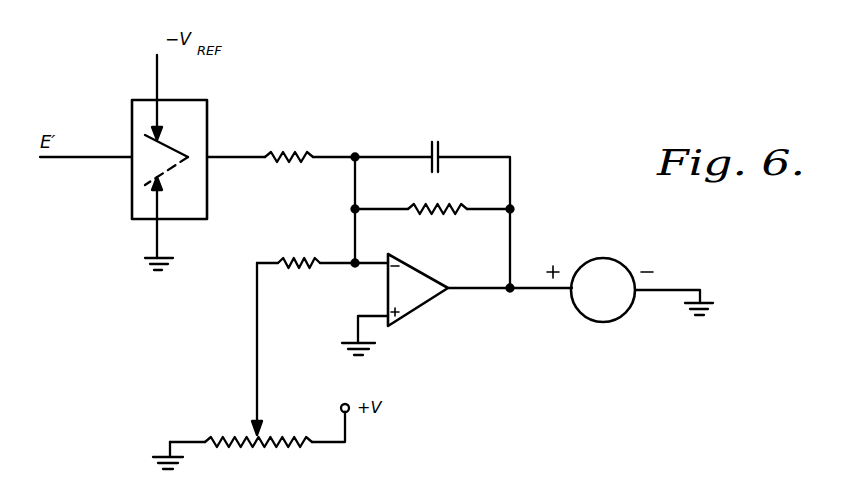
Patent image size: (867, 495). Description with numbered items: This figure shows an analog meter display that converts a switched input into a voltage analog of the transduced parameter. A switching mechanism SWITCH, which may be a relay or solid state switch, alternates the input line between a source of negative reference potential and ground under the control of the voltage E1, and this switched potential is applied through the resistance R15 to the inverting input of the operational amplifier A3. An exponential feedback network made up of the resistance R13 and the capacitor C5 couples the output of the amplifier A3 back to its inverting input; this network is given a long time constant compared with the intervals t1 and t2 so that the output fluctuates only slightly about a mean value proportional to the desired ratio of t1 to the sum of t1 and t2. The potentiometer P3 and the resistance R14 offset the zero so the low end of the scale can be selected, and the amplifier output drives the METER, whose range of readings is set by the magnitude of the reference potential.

The switching mechanism SWITCH is at (207, 110).
The resistance R15 is at (283, 150).
The capacitor C5 is at (440, 150).
The resistance R13 is at (436, 223).
The resistance R14 is at (313, 268).
The operational amplifier A3 is at (418, 290).
The meter METER is at (600, 280).
The potentiometer P3 is at (218, 432).